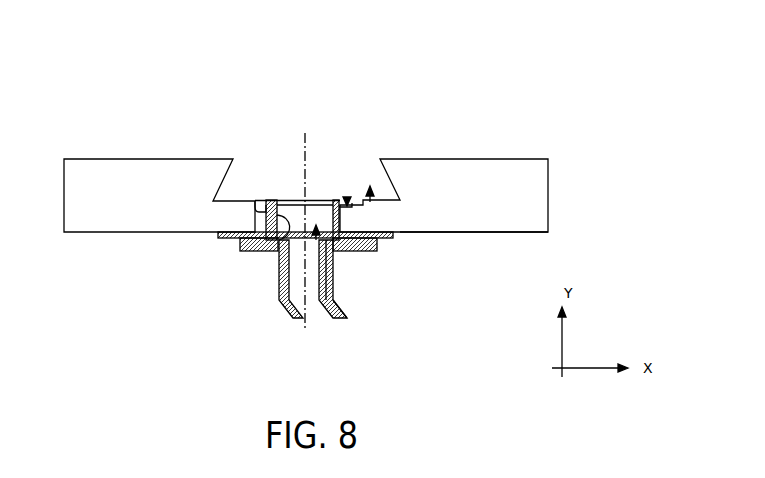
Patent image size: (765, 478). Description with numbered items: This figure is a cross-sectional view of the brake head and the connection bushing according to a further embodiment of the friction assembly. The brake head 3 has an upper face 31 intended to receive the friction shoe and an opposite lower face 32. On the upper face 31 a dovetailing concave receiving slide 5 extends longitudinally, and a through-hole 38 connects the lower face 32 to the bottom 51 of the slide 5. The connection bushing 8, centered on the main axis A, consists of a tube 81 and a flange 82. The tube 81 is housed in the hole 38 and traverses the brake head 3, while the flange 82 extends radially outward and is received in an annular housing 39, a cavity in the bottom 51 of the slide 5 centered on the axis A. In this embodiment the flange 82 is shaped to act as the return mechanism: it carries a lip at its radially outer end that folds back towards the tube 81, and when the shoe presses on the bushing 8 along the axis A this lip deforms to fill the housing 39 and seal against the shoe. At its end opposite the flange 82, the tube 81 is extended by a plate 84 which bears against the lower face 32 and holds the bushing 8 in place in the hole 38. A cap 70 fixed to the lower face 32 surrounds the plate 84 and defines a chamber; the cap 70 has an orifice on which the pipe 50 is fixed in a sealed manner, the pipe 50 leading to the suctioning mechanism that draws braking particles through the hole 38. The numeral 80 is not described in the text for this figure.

The brake head 3 is at (102, 171).
The upper face 31 is at (507, 159).
The lower face 32 is at (470, 233).
The receiving slide 5 is at (372, 203).
The connection bushing 8 is at (338, 230).
The bottom of the slide 51 is at (230, 202).
The flange 82 is at (263, 200).
The annular housing 39 is at (347, 198).
The tube 81 is at (291, 250).
The through-hole 38 is at (320, 310).
The pipe 50 is at (343, 312).
The base plate 80 is at (240, 250).
The plate 84 is at (283, 248).
The cap 70 is at (351, 252).
The main axis A is at (307, 245).